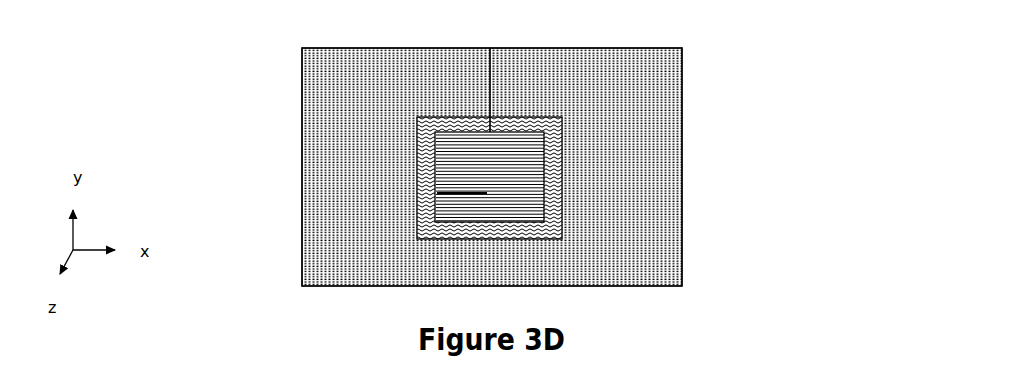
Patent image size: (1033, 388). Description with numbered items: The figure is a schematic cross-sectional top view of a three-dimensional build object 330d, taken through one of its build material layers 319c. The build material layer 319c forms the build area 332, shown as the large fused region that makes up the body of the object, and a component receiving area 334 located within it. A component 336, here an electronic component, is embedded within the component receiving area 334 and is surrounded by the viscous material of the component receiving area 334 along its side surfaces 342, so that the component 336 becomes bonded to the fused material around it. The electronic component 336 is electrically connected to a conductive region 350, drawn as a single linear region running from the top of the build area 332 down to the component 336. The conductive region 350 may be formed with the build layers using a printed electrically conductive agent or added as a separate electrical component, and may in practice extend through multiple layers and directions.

The three-dimensional build object 330d is at (125, 58).
The build area 332 is at (328, 240).
The build material layer 319c is at (682, 82).
The component receiving area 334 is at (418, 153).
The component 336 is at (436, 192).
The side surfaces 342 is at (545, 177).
The conductive region 350 is at (490, 83).